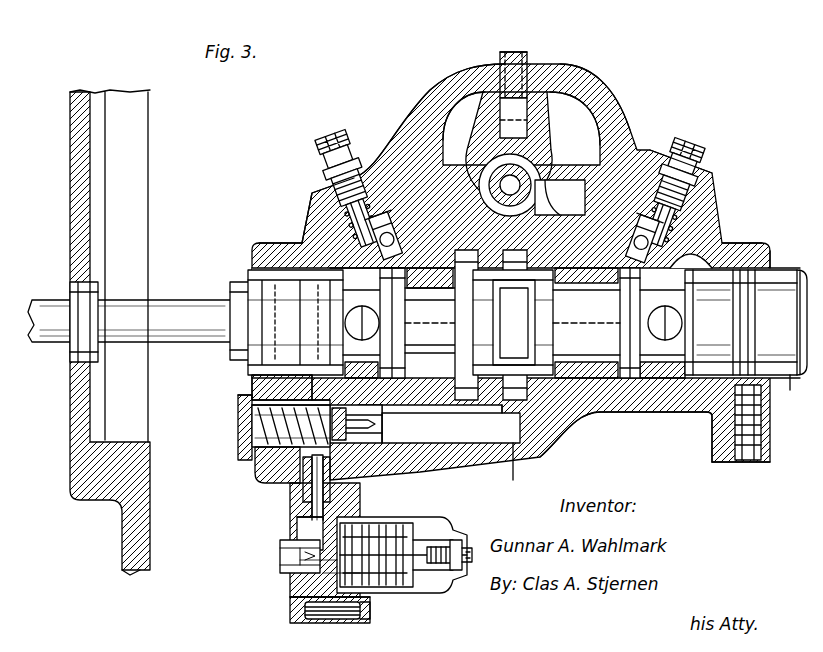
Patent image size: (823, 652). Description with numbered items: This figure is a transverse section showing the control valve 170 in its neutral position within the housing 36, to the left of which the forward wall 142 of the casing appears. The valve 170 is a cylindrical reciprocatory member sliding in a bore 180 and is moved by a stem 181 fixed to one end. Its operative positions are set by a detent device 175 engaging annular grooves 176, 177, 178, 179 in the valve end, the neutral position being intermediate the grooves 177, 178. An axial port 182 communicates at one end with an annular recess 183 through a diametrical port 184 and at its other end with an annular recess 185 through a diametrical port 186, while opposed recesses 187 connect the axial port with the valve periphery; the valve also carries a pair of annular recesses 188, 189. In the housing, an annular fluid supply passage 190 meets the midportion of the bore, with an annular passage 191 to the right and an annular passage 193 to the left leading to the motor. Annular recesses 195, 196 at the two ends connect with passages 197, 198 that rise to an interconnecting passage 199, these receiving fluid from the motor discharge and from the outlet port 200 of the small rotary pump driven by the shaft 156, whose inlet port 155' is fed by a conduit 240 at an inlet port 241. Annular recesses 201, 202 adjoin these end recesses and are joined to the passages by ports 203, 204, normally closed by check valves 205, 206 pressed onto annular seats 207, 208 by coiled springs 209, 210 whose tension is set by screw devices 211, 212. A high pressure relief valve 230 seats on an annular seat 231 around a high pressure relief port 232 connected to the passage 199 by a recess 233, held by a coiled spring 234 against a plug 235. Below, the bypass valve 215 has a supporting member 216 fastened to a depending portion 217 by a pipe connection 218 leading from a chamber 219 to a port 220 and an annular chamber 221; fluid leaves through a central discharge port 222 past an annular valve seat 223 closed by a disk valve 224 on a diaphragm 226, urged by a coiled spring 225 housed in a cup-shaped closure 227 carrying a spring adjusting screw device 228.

The forward wall 142 is at (80, 98).
The stem 181 is at (183, 335).
The valve 170 is at (247, 254).
The housing 36 is at (412, 108).
The passage 197 is at (573, 118).
The passage 198 is at (455, 117).
The outlet port 200 is at (584, 170).
The interconnecting passage 199 is at (548, 80).
The inlet port 241 is at (500, 85).
The conduit 240 is at (528, 58).
The shaft 156 is at (485, 190).
The inlet port 155' is at (478, 166).
The diametrical port 186 is at (353, 320).
The annular recess 202 is at (408, 325).
The annular recess 188 is at (441, 325).
The annular recess 189 is at (555, 318).
The annular recess 183 is at (633, 290).
The diametrical port 184 is at (676, 328).
The annular groove 177 is at (742, 326).
The annular groove 178 is at (800, 272).
The annular groove 176 is at (790, 377).
The annular groove 179 is at (748, 266).
The check valve 205 is at (708, 232).
The screw device 212 is at (331, 140).
The coiled spring 210 is at (316, 208).
The annular recess 185 is at (308, 270).
The annular seat 208 is at (386, 226).
The check valve 206 is at (355, 257).
The port 204 is at (400, 258).
The screw device 211 is at (706, 152).
The coiled spring 209 is at (714, 206).
The annular seat 207 is at (626, 238).
The port 203 is at (656, 250).
The axial port 182 is at (580, 160).
The fluid supply passage 190 is at (473, 478).
The annular seat 231 is at (374, 424).
The annular passage 193 is at (462, 420).
The opposed recesses 187 is at (514, 450).
The recess 233 is at (521, 510).
The high pressure relief port 232 is at (460, 440).
The annular passage 191 is at (583, 420).
The bore 180 is at (612, 418).
The annular recess 201 is at (710, 418).
The detent device 175 is at (712, 440).
The annular recess 195 is at (764, 426).
The chamber 219 is at (253, 468).
The coiled spring 234 is at (246, 443).
The high pressure relief valve 230 is at (252, 428).
The annular recess 196 is at (245, 411).
The plug 235 is at (192, 400).
The depending portion 217 is at (253, 468).
The bypass valve 215 is at (436, 512).
The spring adjusting screw device 228 is at (443, 547).
The coiled spring 225 is at (408, 592).
The cup-shaped closure 227 is at (358, 490).
The port 220 is at (296, 520).
The pipe connection 218 is at (290, 492).
The central discharge port 222 is at (282, 545).
The annular valve seat 223 is at (290, 565).
The annular chamber 221 is at (292, 575).
The supporting member 216 is at (292, 594).
The diaphragm 226 is at (300, 615).
The disk valve 224 is at (366, 605).